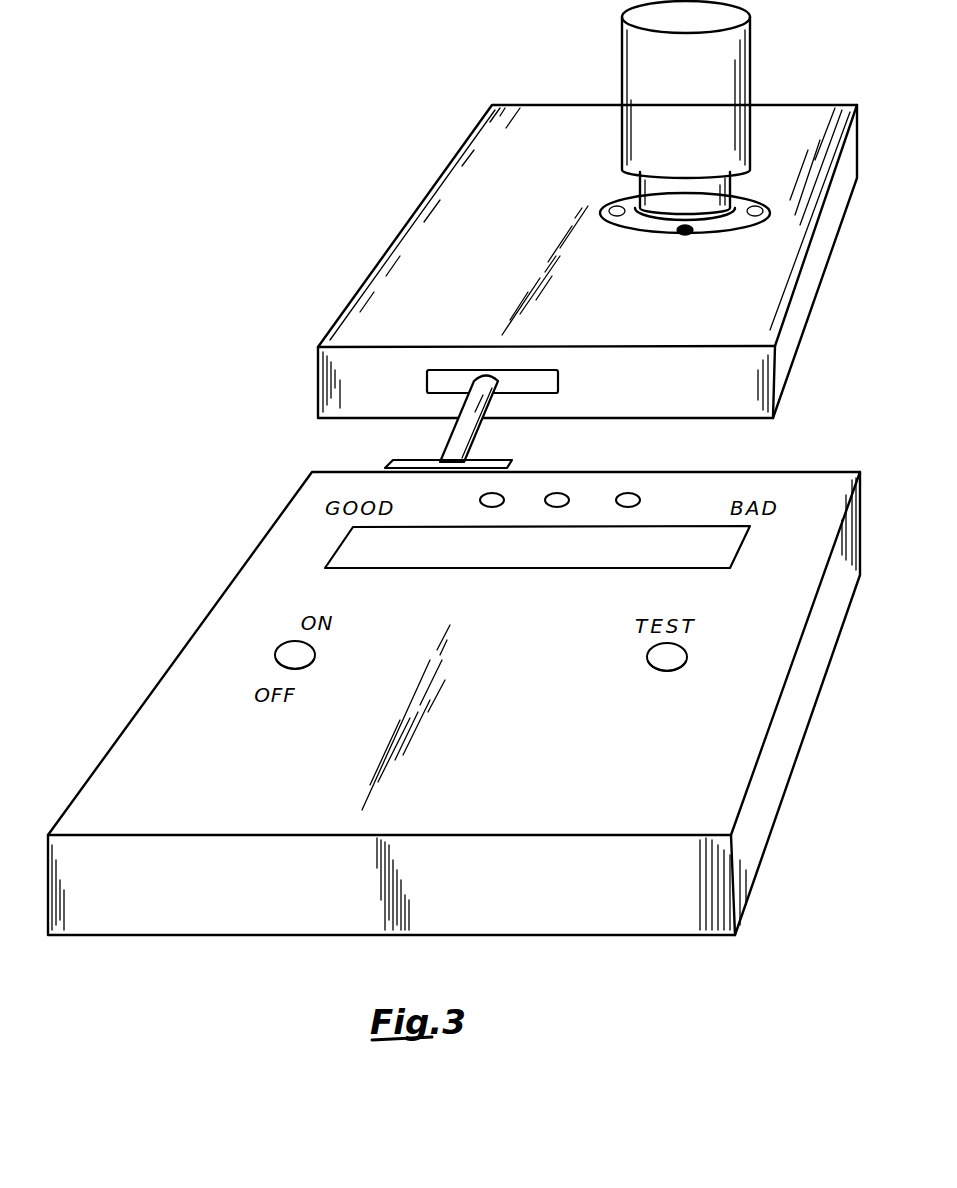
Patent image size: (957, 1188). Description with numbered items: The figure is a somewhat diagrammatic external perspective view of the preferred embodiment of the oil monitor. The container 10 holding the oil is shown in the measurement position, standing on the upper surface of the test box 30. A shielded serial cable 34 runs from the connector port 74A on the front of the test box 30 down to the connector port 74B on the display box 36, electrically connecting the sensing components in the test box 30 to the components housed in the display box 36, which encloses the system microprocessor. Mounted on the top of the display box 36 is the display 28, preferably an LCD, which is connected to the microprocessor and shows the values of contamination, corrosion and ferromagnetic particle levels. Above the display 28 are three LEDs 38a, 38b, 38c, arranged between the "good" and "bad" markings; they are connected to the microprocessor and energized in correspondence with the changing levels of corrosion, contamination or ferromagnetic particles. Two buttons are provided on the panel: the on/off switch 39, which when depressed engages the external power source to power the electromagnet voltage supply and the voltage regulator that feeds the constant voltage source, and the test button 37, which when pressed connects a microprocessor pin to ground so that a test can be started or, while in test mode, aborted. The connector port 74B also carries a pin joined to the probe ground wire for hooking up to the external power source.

The container 10 is at (754, 86).
The test box 30 is at (355, 296).
The connector port 74A is at (558, 380).
The shielded serial cable 34 is at (455, 430).
The connector port 74B is at (385, 466).
The LED 38a is at (504, 498).
The LED 38b is at (569, 498).
The LED 38c is at (640, 498).
The display 28 is at (740, 549).
The switch 39 is at (276, 652).
The test button 37 is at (647, 656).
The display box 36 is at (778, 750).